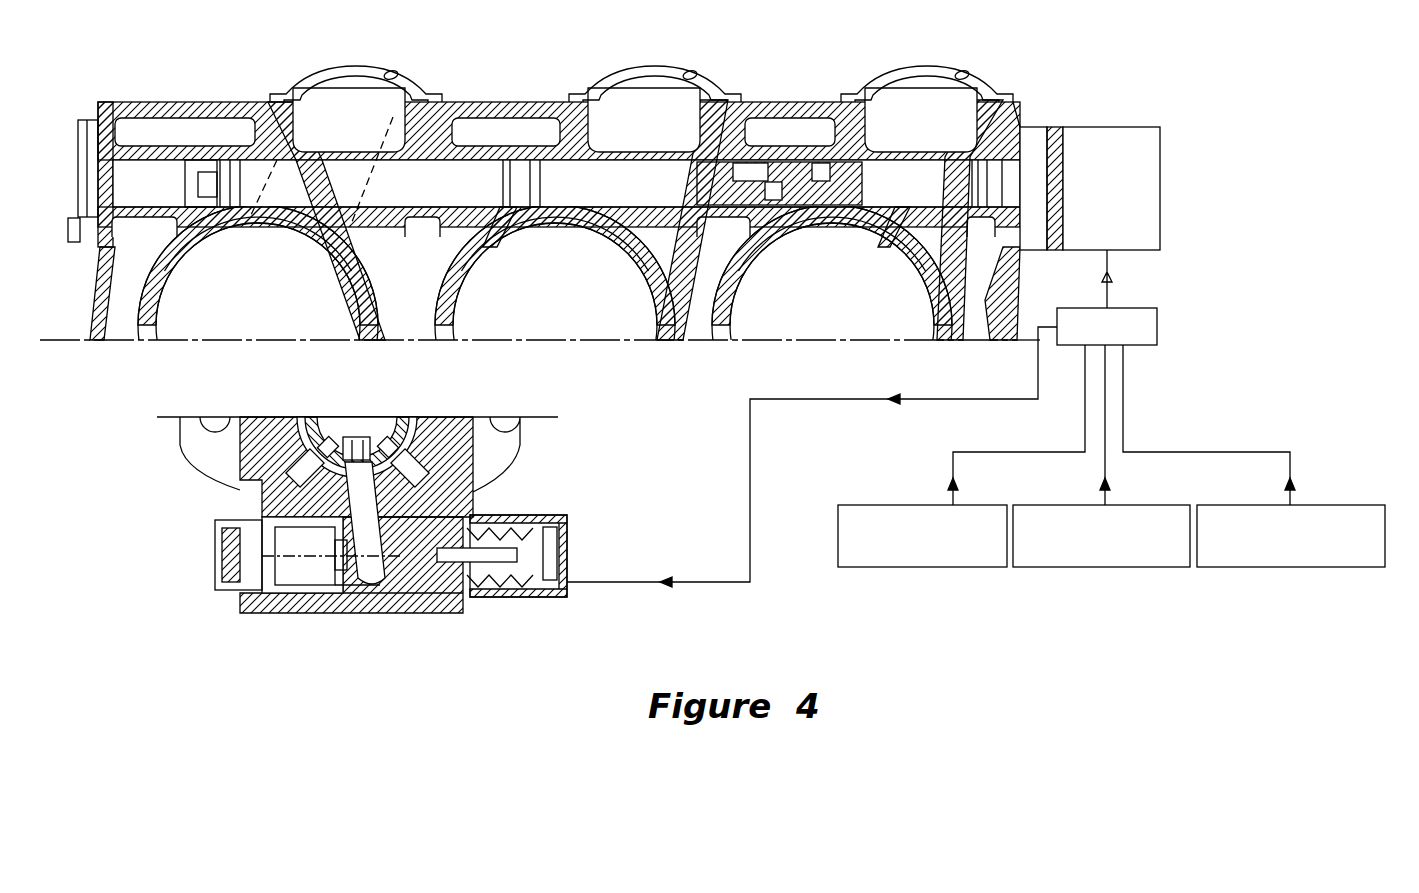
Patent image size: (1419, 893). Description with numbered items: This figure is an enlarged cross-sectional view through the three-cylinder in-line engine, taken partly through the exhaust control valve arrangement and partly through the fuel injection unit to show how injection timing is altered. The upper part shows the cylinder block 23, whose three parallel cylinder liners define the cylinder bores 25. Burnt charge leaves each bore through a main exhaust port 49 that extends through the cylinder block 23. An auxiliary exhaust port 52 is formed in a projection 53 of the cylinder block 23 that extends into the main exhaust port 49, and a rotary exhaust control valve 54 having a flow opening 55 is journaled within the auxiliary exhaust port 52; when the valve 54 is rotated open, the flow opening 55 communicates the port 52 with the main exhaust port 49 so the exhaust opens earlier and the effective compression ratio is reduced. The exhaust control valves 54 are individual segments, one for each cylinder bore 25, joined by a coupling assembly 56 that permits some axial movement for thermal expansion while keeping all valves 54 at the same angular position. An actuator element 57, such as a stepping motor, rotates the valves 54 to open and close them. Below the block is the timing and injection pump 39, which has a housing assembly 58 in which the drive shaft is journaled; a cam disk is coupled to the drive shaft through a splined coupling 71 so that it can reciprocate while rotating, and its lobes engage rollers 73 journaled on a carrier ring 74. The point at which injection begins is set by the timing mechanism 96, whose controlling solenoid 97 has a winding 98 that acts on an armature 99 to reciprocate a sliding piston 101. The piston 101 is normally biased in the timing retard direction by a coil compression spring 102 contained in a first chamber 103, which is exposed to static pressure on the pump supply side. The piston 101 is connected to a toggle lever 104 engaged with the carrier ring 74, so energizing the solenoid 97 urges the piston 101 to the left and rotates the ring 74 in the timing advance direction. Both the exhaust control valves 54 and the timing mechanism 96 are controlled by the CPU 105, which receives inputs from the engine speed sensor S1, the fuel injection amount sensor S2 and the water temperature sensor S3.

The cylinder block 23 is at (518, 108).
The cylinder bore 25 is at (160, 310).
The timing and injection pump 39 is at (197, 450).
The main exhaust port 49 is at (350, 98).
The auxiliary exhaust port 52 is at (353, 237).
The projection 53 is at (262, 232).
The exhaust control valve 54 is at (395, 120).
The flow opening 55 is at (262, 187).
The coupling assembly 56 is at (472, 178).
The actuator element 57 is at (1147, 170).
The housing assembly 58 is at (477, 458).
The splined coupling 71 is at (325, 422).
The rollers 73 is at (287, 447).
The carrier ring 74 is at (347, 460).
The timing mechanism 96 is at (400, 613).
The controlling solenoid 97 is at (552, 560).
The winding 98 is at (543, 580).
The armature 99 is at (473, 562).
The sliding piston 101 is at (372, 588).
The coil compression spring 102 is at (213, 580).
The first chamber 103 is at (303, 573).
The toggle lever 104 is at (370, 560).
The CPU 105 is at (1160, 328).
The engine speed sensor S1 is at (1285, 567).
The fuel injection amount sensor S2 is at (1115, 567).
The water temperature sensor S3 is at (940, 567).